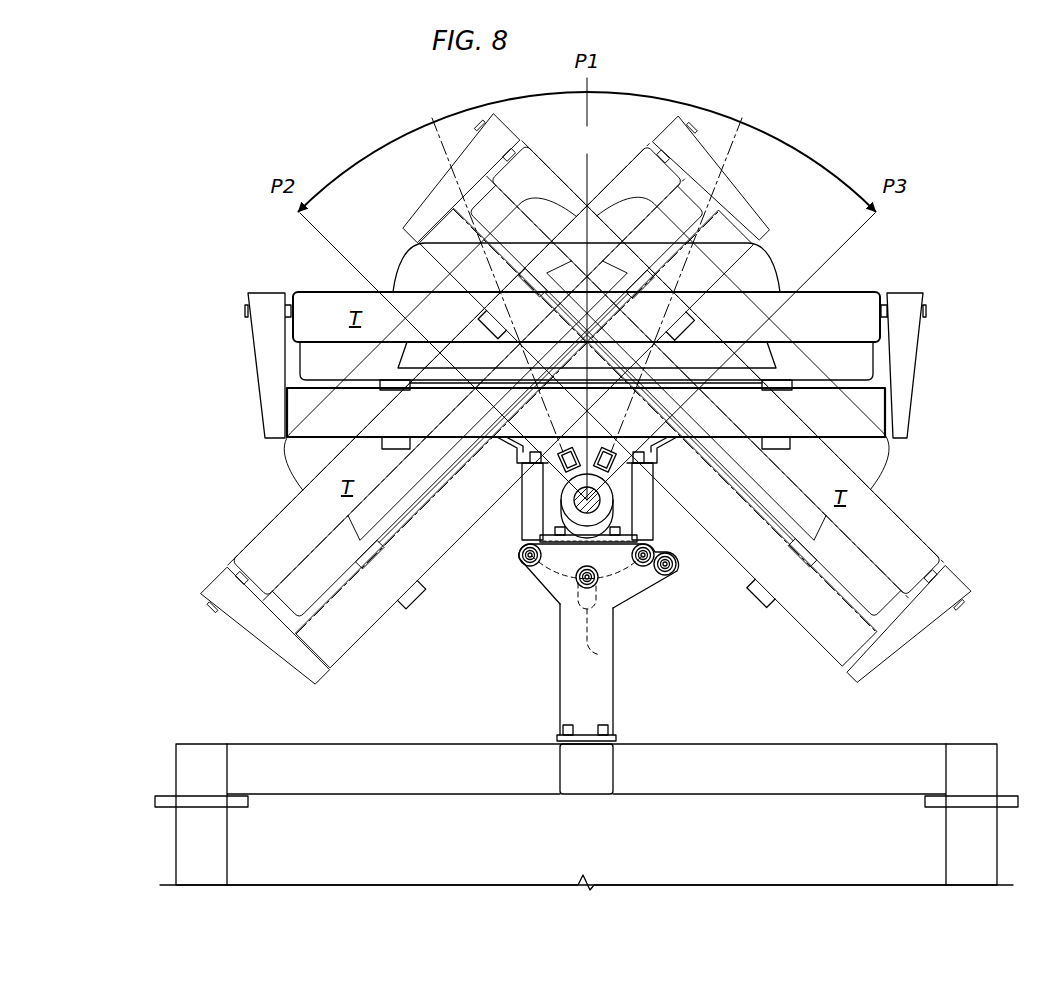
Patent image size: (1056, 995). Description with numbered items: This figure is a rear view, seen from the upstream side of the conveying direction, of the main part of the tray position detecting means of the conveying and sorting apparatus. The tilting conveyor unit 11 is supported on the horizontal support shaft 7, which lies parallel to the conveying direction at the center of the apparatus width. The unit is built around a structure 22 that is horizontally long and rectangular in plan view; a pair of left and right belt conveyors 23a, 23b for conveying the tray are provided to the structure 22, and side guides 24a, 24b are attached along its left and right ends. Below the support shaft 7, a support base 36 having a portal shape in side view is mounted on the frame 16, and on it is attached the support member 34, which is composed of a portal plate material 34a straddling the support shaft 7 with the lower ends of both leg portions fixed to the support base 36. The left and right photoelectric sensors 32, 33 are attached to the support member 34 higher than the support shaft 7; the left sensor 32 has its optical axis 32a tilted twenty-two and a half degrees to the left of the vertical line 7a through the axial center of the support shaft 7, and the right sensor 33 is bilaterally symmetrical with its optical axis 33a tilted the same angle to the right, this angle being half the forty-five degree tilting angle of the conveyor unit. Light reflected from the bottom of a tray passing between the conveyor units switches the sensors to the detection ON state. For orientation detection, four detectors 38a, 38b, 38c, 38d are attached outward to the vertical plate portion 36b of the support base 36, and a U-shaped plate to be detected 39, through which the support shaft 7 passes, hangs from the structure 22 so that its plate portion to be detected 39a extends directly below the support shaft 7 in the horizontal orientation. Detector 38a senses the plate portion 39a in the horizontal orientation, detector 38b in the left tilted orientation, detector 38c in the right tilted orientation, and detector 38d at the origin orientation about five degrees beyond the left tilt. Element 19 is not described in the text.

The support shaft 7 is at (601, 502).
The vertical line 7a is at (590, 289).
The tilting conveyor unit 11 is at (335, 579).
The frame 16 is at (714, 762).
The bearing 19 is at (574, 495).
The structure 22 is at (845, 413).
The belt conveyor 23a is at (399, 377).
The belt conveyor 23b is at (779, 377).
The side guide 24a is at (263, 347).
The side guide 24b is at (905, 352).
The photoelectric sensor 32 is at (558, 450).
The optical axis 32a is at (479, 269).
The photoelectric sensor 33 is at (620, 450).
The optical axis 33a is at (691, 269).
The support member 34 is at (520, 497).
The portal plate material 34a is at (622, 513).
The support base 36 is at (581, 528).
The vertical plate portion 36b is at (578, 694).
The detector 38a is at (577, 581).
The detector 38b is at (644, 567).
The detector 38c is at (519, 556).
The detector 38d is at (677, 567).
The plate to be detected 39 is at (652, 540).
The plate portion to be detected 39a is at (590, 650).